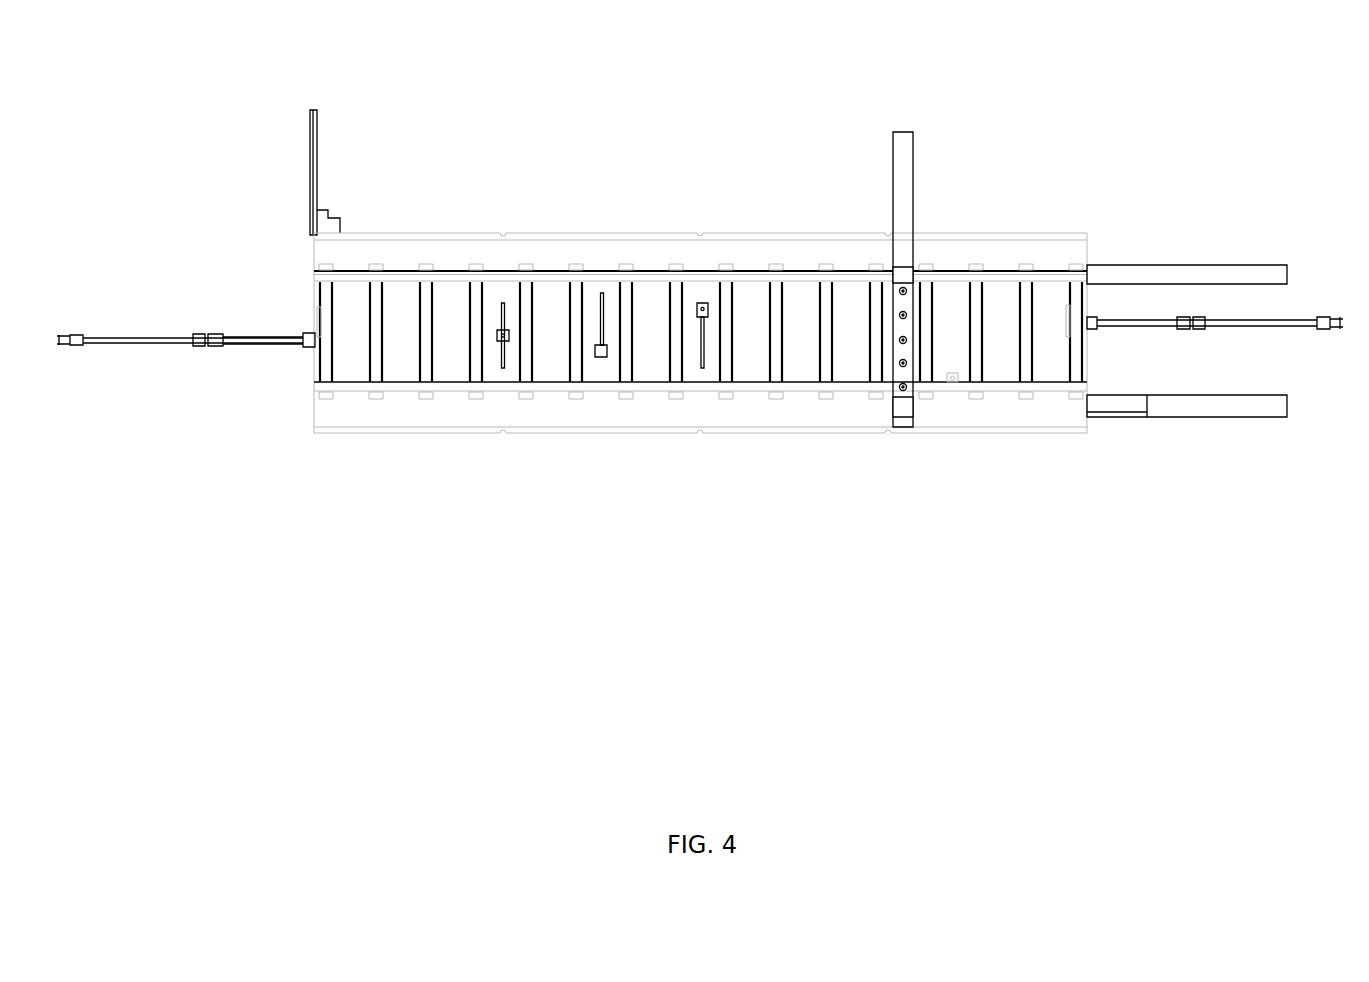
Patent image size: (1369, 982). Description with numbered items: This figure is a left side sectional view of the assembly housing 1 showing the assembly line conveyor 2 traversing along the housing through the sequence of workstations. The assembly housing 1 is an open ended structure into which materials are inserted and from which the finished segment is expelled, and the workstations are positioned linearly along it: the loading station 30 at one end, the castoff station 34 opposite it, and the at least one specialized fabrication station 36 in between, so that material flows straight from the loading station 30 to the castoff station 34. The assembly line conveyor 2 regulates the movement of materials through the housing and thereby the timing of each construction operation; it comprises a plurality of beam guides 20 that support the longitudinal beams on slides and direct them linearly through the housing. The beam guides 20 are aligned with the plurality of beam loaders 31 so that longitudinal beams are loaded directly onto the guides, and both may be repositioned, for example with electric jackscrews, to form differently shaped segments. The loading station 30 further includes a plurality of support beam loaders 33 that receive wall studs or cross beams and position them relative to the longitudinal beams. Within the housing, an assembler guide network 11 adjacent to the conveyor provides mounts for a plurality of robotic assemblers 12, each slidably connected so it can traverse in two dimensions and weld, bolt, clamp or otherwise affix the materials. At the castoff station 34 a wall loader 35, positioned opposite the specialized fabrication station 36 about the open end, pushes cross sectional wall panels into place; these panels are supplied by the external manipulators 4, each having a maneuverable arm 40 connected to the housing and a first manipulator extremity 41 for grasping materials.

The assembly housing 1 is at (1160, 27).
The assembly line conveyor 2 is at (245, 365).
The external manipulator 4 is at (187, 191).
The assembler guide network 11 is at (505, 311).
The robotic assembler 12 is at (497, 337).
The beam guide 20 is at (315, 270).
The loading station 30 is at (1007, 233).
The beam loader 31 is at (1210, 272).
The support beam loader 33 is at (912, 148).
The castoff station 34 is at (455, 233).
The wall loader 35 is at (340, 218).
The specialized fabrication station 36 is at (655, 233).
The maneuverable arm 40 is at (1297, 327).
The first manipulator extremity 41 is at (1325, 320).